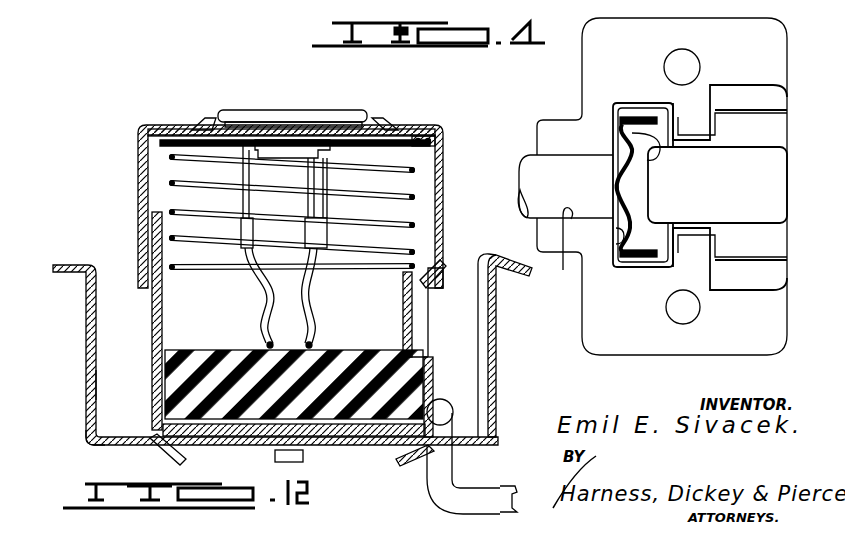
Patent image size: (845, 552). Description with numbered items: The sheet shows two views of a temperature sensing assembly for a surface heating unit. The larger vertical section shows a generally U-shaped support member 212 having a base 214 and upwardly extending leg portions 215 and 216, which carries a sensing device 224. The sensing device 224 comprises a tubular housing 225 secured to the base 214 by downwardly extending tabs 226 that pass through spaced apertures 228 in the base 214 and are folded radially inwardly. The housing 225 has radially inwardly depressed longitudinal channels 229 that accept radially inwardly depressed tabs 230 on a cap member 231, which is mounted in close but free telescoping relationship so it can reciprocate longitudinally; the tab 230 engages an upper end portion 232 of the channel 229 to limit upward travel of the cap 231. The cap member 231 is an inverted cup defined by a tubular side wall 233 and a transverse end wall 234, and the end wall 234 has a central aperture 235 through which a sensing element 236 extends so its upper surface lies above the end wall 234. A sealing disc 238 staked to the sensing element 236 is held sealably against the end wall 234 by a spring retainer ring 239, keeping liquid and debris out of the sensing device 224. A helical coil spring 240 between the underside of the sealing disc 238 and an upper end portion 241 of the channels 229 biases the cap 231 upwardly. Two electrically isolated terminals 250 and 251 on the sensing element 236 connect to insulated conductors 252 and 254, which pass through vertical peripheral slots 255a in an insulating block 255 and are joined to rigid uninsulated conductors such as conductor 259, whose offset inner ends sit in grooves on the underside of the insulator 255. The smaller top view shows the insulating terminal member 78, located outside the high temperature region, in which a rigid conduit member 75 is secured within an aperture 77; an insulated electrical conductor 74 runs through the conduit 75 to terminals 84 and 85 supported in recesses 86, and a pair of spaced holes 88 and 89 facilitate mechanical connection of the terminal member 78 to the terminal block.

In FIG. 12, the U-shaped support member 212 is at (111, 340).
In FIG. 12, the base 214 is at (120, 450).
In FIG. 12, the leg portion 215 is at (126, 371).
In FIG. 12, the leg portion 216 is at (498, 373).
In FIG. 12, the sensing device 224 is at (138, 236).
In FIG. 12, the tubular housing 225 is at (455, 366).
In FIG. 12, the tabs 226 is at (398, 458).
In FIG. 12, the apertures 228 is at (160, 447).
In FIG. 12, the channels 229 is at (410, 343).
In FIG. 12, the tabs 230 is at (413, 340).
In FIG. 12, the cap member 231 is at (145, 136).
In FIG. 12, the upper end portion 232 is at (437, 268).
In FIG. 12, the tubular side wall 233 is at (148, 173).
In FIG. 12, the transverse end wall 234 is at (199, 128).
In FIG. 12, the central aperture 235 is at (386, 118).
In FIG. 12, the sensing element 236 is at (303, 108).
In FIG. 12, the sealing disc 238 is at (425, 130).
In FIG. 12, the spring retainer ring 239 is at (150, 144).
In FIG. 12, the helical coil spring 240 is at (420, 200).
In FIG. 12, the upper end portion 241 is at (412, 265).
In FIG. 12, the terminal 250 is at (252, 185).
In FIG. 12, the terminal 251 is at (338, 187).
In FIG. 12, the insulated conductor 252 is at (268, 304).
In FIG. 12, the insulated conductor 254 is at (322, 305).
In FIG. 12, the insulating block 255 is at (246, 344).
In FIG. 12, the vertical peripheral slots 255a is at (294, 459).
In FIG. 12, the conductor 259 is at (488, 487).
In FIG. 4, the insulated electrical conductor 74 is at (628, 224).
In FIG. 4, the conduit member 75 is at (527, 152).
In FIG. 4, the aperture 77 is at (554, 253).
In FIG. 4, the insulating terminal member 78 is at (657, 355).
In FIG. 4, the terminal 84 is at (637, 117).
In FIG. 4, the terminal 85 is at (648, 260).
In FIG. 4, the recesses 86 is at (638, 191).
In FIG. 4, the hole 88 is at (686, 53).
In FIG. 4, the hole 89 is at (694, 306).